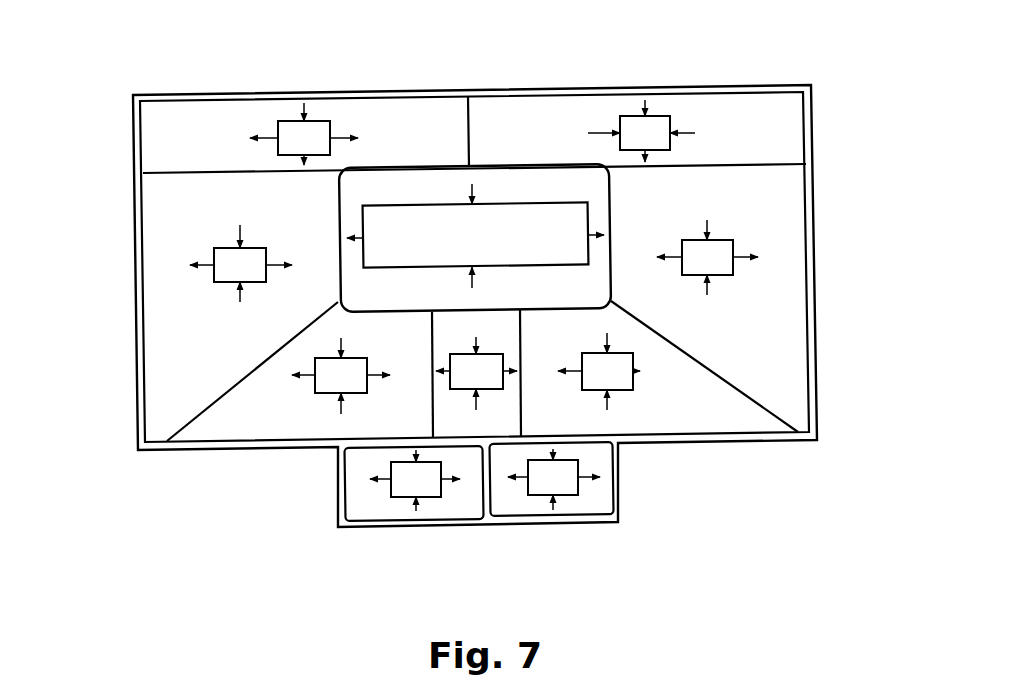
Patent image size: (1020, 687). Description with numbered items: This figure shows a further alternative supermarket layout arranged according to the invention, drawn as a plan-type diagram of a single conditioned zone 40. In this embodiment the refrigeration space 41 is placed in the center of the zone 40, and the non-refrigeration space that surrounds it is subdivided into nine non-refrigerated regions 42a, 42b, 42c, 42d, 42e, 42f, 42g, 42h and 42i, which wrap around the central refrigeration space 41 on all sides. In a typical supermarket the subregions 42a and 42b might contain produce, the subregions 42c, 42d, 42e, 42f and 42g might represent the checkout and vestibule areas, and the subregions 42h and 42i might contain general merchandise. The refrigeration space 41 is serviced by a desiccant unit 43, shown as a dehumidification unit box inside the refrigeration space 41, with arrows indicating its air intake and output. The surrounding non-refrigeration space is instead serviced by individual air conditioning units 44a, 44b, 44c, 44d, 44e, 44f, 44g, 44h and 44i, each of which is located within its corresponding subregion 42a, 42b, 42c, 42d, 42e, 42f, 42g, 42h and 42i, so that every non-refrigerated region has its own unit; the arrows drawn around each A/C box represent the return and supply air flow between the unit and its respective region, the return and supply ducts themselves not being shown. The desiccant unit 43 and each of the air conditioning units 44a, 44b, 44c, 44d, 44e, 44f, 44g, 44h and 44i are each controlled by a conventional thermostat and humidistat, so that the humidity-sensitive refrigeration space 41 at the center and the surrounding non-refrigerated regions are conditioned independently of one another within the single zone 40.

The zone 40 is at (137, 388).
The refrigeration space 41 is at (574, 183).
The desiccant unit 43 is at (452, 203).
The non-refrigerated region 42a is at (210, 127).
The non-refrigerated region 42b is at (175, 265).
The non-refrigerated region 42c is at (245, 428).
The non-refrigerated region 42d is at (355, 497).
The non-refrigerated region 42e is at (495, 423).
The non-refrigerated region 42f is at (603, 503).
The non-refrigerated region 42g is at (660, 405).
The non-refrigerated region 42h is at (753, 305).
The non-refrigerated region 42i is at (748, 118).
The air conditioning unit 44a is at (322, 121).
The air conditioning unit 44b is at (208, 275).
The air conditioning unit 44c is at (318, 393).
The air conditioning unit 44d is at (428, 500).
The air conditioning unit 44e is at (505, 388).
The air conditioning unit 44f is at (540, 498).
The air conditioning unit 44g is at (636, 376).
The air conditioning unit 44h is at (735, 245).
The air conditioning unit 44i is at (662, 116).